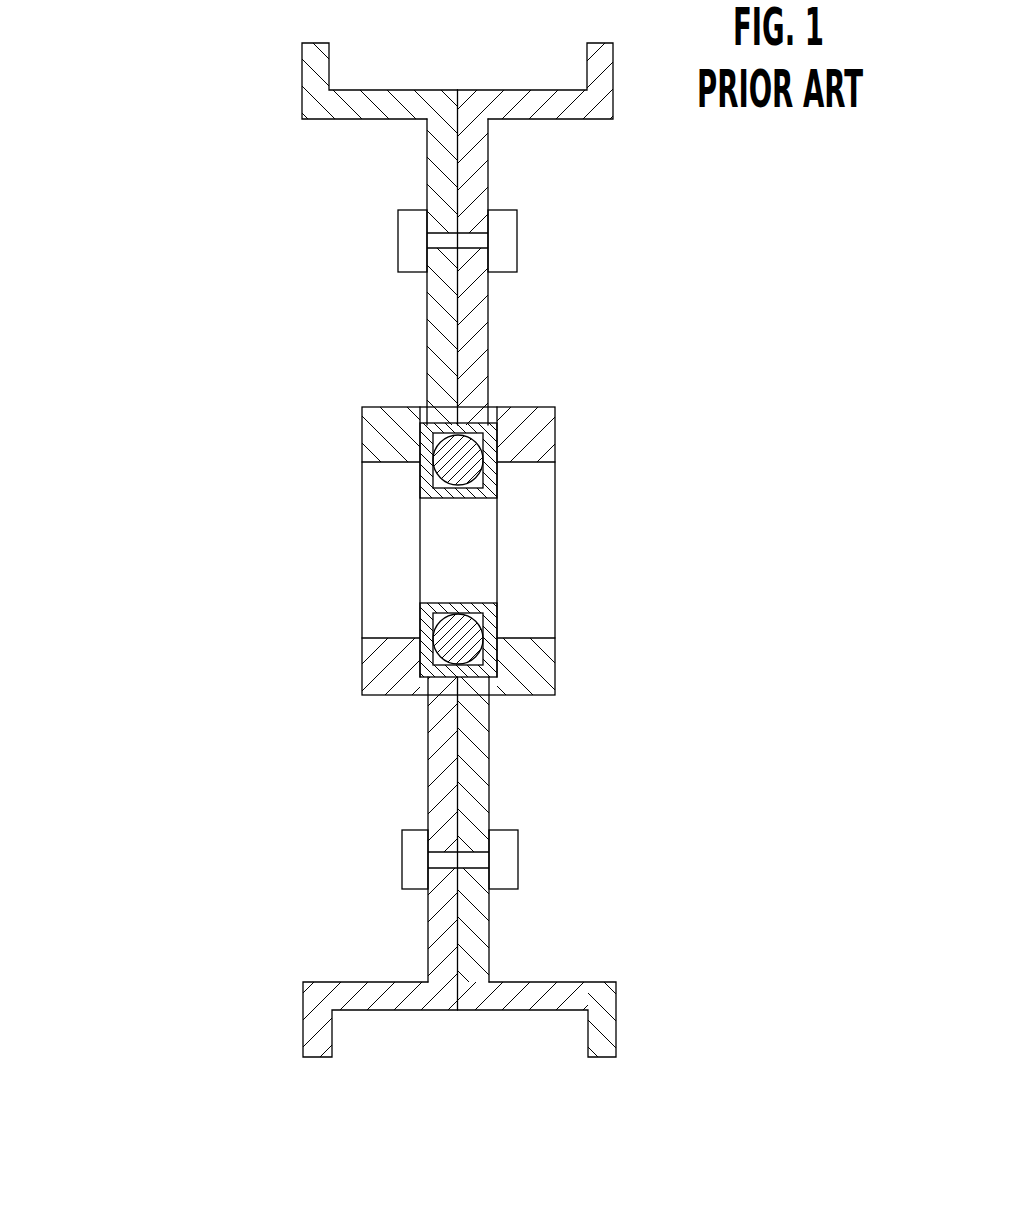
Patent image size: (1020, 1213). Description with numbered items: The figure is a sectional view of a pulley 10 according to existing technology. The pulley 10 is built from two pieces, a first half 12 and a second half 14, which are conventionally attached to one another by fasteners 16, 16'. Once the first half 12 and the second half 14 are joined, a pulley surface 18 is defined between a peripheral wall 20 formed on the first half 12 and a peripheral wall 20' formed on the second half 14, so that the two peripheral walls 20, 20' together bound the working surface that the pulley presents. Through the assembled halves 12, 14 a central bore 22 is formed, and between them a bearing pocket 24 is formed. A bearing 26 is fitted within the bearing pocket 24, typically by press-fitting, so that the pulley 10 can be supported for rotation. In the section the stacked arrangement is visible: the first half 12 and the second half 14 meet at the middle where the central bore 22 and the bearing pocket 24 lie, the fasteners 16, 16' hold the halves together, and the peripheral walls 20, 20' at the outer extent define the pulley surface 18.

The pulley 10 is at (176, 355).
The first half 12 is at (440, 312).
The second half 14 is at (475, 765).
The fastener 16 is at (476, 213).
The fastener 16' is at (502, 840).
The pulley surface 18 is at (370, 1003).
The peripheral wall 20 is at (380, 64).
The peripheral wall 20' is at (536, 64).
The central bore 22 is at (522, 462).
The bearing pocket 24 is at (420, 558).
The bearing 26 is at (490, 617).